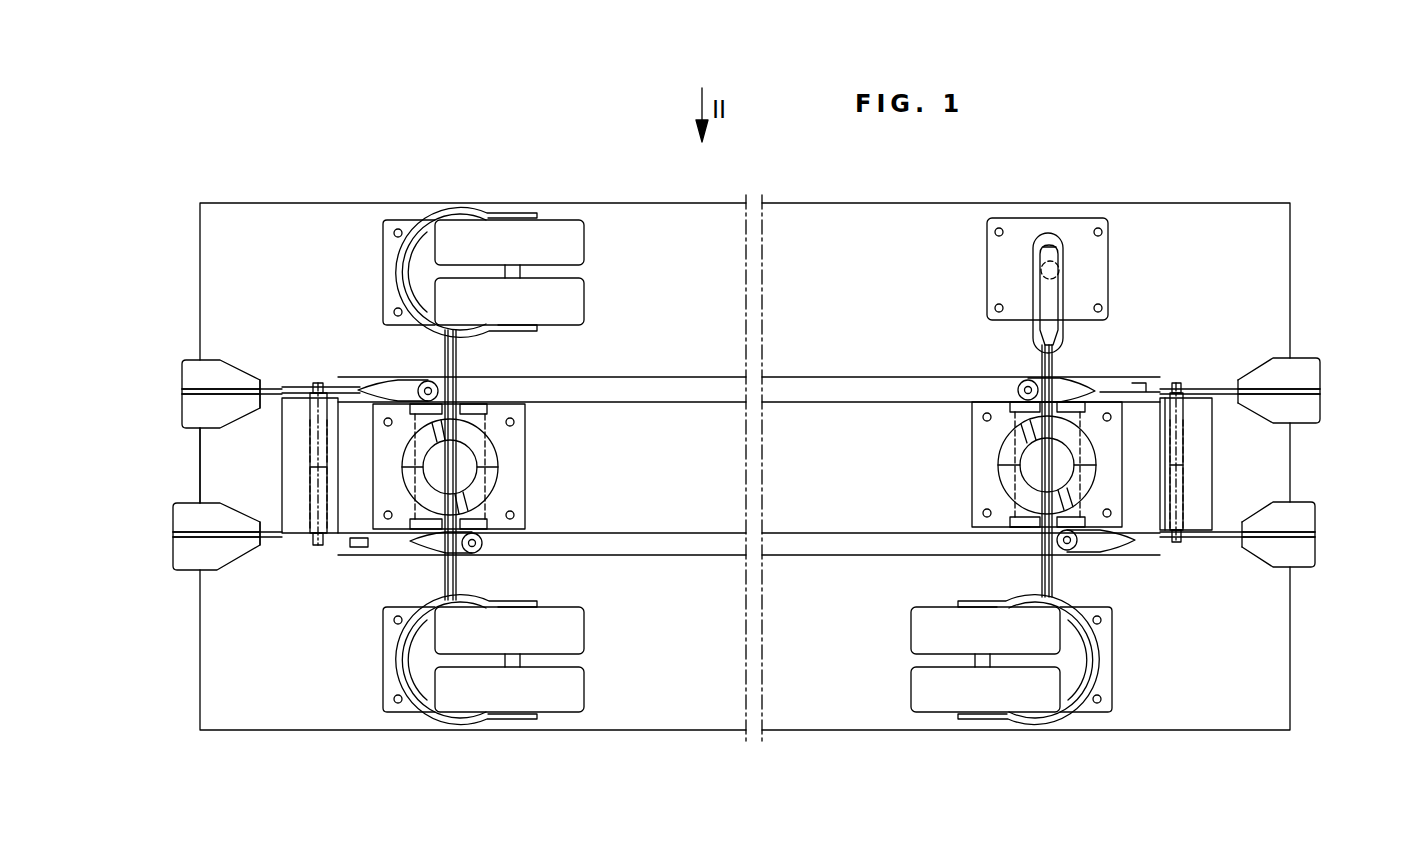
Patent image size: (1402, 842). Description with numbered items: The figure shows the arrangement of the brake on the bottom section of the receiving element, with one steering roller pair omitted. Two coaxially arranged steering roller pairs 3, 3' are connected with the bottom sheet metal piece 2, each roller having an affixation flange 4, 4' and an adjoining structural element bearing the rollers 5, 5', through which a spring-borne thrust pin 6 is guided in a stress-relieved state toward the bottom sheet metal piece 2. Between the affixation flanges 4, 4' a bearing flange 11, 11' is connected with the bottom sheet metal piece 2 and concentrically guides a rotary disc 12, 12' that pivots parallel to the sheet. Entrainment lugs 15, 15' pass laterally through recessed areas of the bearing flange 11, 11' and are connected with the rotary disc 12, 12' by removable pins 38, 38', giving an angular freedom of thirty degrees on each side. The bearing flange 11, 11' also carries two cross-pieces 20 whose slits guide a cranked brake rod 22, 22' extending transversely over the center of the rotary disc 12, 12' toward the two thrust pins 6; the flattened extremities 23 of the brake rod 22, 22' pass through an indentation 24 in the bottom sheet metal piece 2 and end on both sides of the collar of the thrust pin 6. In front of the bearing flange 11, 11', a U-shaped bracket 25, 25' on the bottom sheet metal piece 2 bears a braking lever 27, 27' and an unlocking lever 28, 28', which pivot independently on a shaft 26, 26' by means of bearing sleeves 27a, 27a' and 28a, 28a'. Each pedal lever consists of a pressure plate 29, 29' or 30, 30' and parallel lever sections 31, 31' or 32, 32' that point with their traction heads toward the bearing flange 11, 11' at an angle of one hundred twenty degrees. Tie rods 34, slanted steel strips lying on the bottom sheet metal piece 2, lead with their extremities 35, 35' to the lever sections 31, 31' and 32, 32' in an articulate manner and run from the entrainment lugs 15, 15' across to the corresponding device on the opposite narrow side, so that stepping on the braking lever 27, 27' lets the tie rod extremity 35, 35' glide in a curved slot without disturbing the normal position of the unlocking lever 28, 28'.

The bottom sheet metal piece 2 is at (788, 216).
The steering roller pair 3 is at (972, 696).
The steering roller pair 3' is at (517, 471).
The affixation flange 4 is at (1038, 240).
The affixation flange 4' is at (400, 241).
The structural element bearing the rollers 5 is at (1035, 685).
The structural element bearing the rollers 5' is at (460, 467).
The thrust pin 6 is at (1058, 232).
The bearing flange 11 is at (1018, 464).
The bearing flange 11' is at (476, 466).
The rotary disc 12 is at (1008, 465).
The rotary disc 12' is at (492, 460).
The entrainment lug 15 is at (1036, 369).
The entrainment lug 15' is at (360, 369).
The cross-piece 20 is at (1020, 522).
The brake rod 22 is at (1072, 474).
The brake rod 22' is at (427, 465).
The extremity of the brake rod 23 is at (1052, 262).
The indentation 24 is at (1047, 246).
The U-shaped bracket 25 is at (1189, 498).
The U-shaped bracket 25' is at (303, 506).
The shaft 26 is at (1188, 435).
The shaft 26' is at (329, 494).
The braking lever 27 is at (1304, 563).
The braking lever 27' is at (201, 367).
The bearing sleeve 27a is at (1225, 498).
The bearing sleeve 27a' is at (277, 442).
The unlocking lever 28 is at (1304, 375).
The unlocking lever 28' is at (204, 553).
The bearing sleeve 28a is at (1223, 441).
The bearing sleeve 28a' is at (277, 498).
The pressure plate 29 is at (1294, 563).
The pressure plate 29' is at (212, 367).
The pressure plate 30 is at (1290, 366).
The pressure plate 30' is at (207, 584).
The lever section 31 is at (1241, 365).
The lever section 31' is at (231, 516).
The lever section 32 is at (1246, 573).
The lever section 32' is at (286, 442).
The tie rod 34 is at (683, 380).
The tie rod extremity 35 is at (1130, 359).
The tie rod extremity 35' is at (373, 574).
The removable pin 38 is at (1105, 558).
The removable pin 38' is at (476, 563).